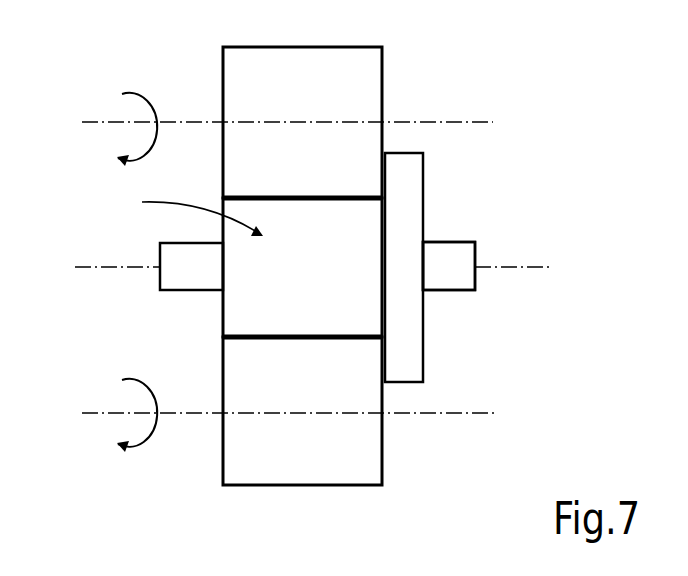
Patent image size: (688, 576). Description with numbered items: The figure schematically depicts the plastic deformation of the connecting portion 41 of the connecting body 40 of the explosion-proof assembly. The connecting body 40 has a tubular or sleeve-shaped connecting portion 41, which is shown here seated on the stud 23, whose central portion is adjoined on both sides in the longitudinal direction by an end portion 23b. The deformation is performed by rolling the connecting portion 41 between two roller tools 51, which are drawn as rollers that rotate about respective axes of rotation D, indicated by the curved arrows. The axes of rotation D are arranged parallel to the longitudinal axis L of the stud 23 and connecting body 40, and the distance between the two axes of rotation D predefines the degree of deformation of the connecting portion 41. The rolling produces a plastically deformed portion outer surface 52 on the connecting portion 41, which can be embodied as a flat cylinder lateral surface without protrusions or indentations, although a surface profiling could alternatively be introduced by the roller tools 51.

The roller tool 51 is at (358, 73).
The connecting portion 41 is at (252, 292).
The connecting body 40 is at (413, 197).
The stud 23 is at (457, 260).
The end portion 23b is at (170, 288).
The plastically deformed portion outer surface 52 is at (186, 213).
The axis of rotation D is at (482, 121).
The longitudinal axis L is at (542, 268).